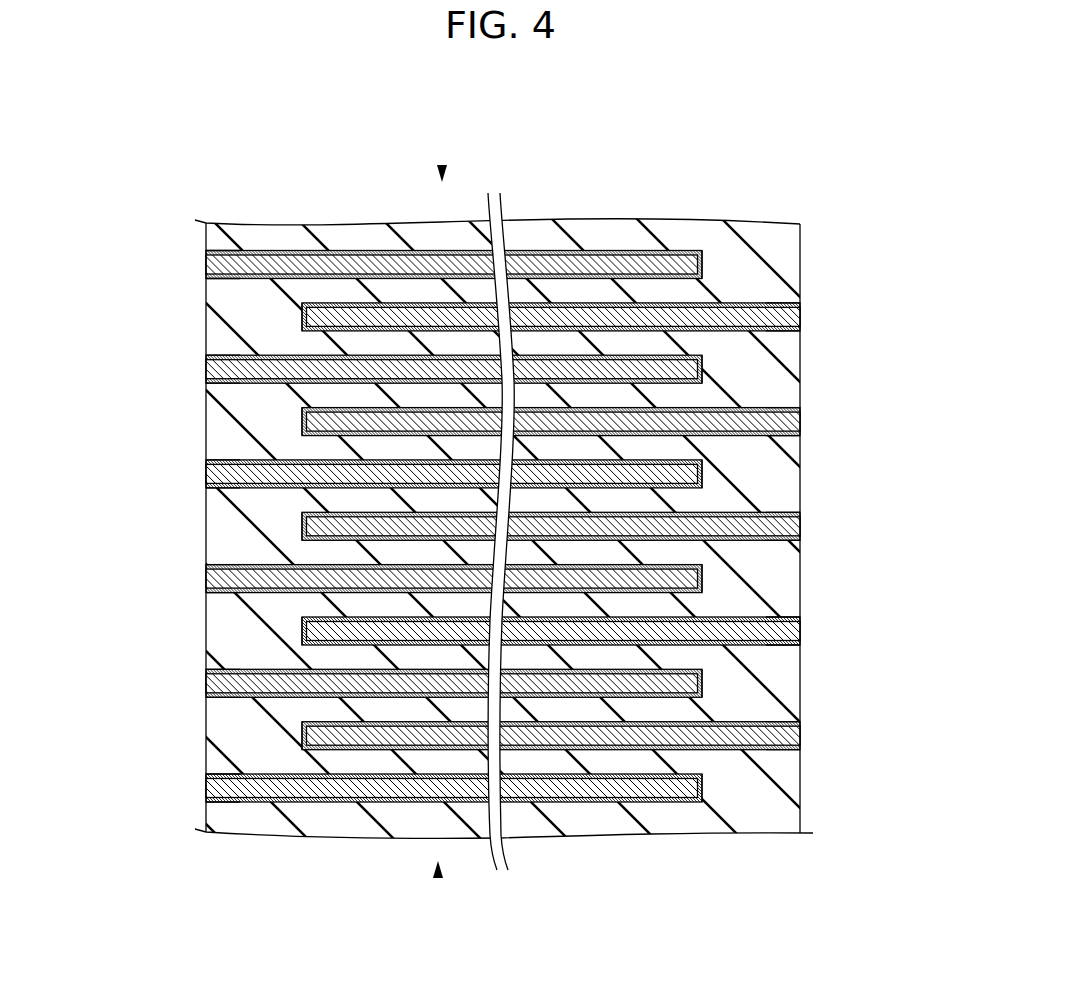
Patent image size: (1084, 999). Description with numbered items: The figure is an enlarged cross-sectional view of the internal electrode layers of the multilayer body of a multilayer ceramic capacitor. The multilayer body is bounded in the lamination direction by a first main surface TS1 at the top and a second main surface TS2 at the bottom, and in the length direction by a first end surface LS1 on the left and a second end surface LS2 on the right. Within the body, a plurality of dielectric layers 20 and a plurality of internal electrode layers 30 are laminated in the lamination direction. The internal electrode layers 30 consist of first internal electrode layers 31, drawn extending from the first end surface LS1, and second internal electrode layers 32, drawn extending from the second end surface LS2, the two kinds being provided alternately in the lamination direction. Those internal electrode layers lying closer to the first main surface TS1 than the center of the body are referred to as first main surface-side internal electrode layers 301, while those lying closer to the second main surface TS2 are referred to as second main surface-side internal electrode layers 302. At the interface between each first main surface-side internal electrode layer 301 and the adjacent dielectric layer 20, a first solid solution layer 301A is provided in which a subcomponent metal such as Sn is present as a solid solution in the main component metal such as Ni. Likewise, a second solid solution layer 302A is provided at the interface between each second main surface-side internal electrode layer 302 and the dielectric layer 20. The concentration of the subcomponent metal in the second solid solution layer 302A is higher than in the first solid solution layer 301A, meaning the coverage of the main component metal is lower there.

The dielectric layer 20 is at (353, 250).
The internal electrode layer 30 is at (501, 527).
The first internal electrode layer 31 is at (454, 526).
The second internal electrode layer 32 is at (551, 526).
The first main surface-side internal electrode layer 301 is at (206, 262).
The first solid solution layer 301A is at (206, 252).
The second main surface-side internal electrode layer 302 is at (206, 576).
The second solid solution layer 302A is at (206, 566).
The first main surface TS1 is at (442, 166).
The second main surface TS2 is at (438, 877).
The first end surface LS1 is at (205, 817).
The second end surface LS2 is at (800, 803).